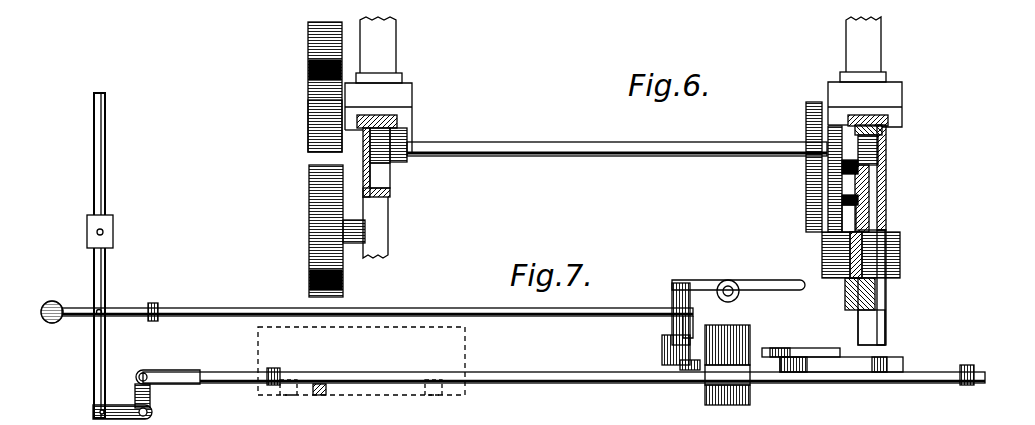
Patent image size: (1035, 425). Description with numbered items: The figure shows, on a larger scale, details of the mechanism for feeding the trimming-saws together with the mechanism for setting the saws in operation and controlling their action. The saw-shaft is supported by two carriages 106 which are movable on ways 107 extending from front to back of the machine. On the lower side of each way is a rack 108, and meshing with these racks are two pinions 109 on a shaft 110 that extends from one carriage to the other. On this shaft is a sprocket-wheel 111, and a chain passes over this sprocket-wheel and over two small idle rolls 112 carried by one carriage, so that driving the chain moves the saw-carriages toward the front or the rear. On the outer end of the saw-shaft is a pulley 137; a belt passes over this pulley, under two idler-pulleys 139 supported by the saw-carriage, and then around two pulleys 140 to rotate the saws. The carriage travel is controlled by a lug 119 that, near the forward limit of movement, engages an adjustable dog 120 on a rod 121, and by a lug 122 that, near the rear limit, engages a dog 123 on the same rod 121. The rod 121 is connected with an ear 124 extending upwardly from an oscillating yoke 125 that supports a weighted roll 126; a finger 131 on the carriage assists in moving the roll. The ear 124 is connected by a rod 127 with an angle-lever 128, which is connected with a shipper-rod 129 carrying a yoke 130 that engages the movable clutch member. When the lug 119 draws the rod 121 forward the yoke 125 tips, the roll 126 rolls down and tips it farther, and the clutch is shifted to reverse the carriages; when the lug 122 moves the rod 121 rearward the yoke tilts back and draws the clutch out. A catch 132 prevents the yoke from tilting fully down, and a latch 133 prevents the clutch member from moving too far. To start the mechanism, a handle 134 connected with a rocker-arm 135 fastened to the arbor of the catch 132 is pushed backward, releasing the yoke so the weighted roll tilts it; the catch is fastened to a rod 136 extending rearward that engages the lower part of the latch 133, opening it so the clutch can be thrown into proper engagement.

In FIG. 6, the carriage 106 is at (412, 112).
In FIG. 7, the carriage 106 is at (466, 349).
In FIG. 6, the ways 107 is at (385, 118).
In FIG. 6, the rack 108 is at (408, 131).
In FIG. 6, the pinion 109 is at (382, 170).
In FIG. 6, the shaft 110 is at (617, 139).
In FIG. 6, the sprocket-wheel 111 is at (806, 122).
In FIG. 6, the idle rolls 112 is at (842, 203).
In FIG. 7, the lug 119 is at (435, 396).
In FIG. 7, the adjustable dog 120 is at (965, 386).
In FIG. 6, the rod 121 is at (828, 160).
In FIG. 7, the rod 121 is at (606, 383).
In FIG. 7, the lug 122 is at (289, 396).
In FIG. 7, the dog 123 is at (278, 368).
In FIG. 6, the ear 124 is at (875, 195).
In FIG. 7, the ear 124 is at (798, 355).
In FIG. 6, the oscillating yoke 125 is at (886, 290).
In FIG. 7, the oscillating yoke 125 is at (892, 392).
In FIG. 6, the weighted roll 126 is at (900, 243).
In FIG. 6, the rod 127 is at (820, 230).
In FIG. 7, the rod 127 is at (175, 370).
In FIG. 7, the angle-lever 128 is at (178, 403).
In FIG. 7, the shipper-rod 129 is at (94, 360).
In FIG. 7, the yoke 130 is at (87, 232).
In FIG. 6, the finger 131 is at (842, 182).
In FIG. 7, the catch 132 is at (665, 365).
In FIG. 7, the latch 133 is at (95, 306).
In FIG. 7, the handle 134 is at (790, 291).
In FIG. 7, the rocker-arm 135 is at (672, 291).
In FIG. 7, the rod 136 is at (548, 316).
In FIG. 6, the pulley 137 is at (306, 47).
In FIG. 6, the idler-pulleys 139 is at (306, 122).
In FIG. 6, the pulleys 140 is at (307, 230).